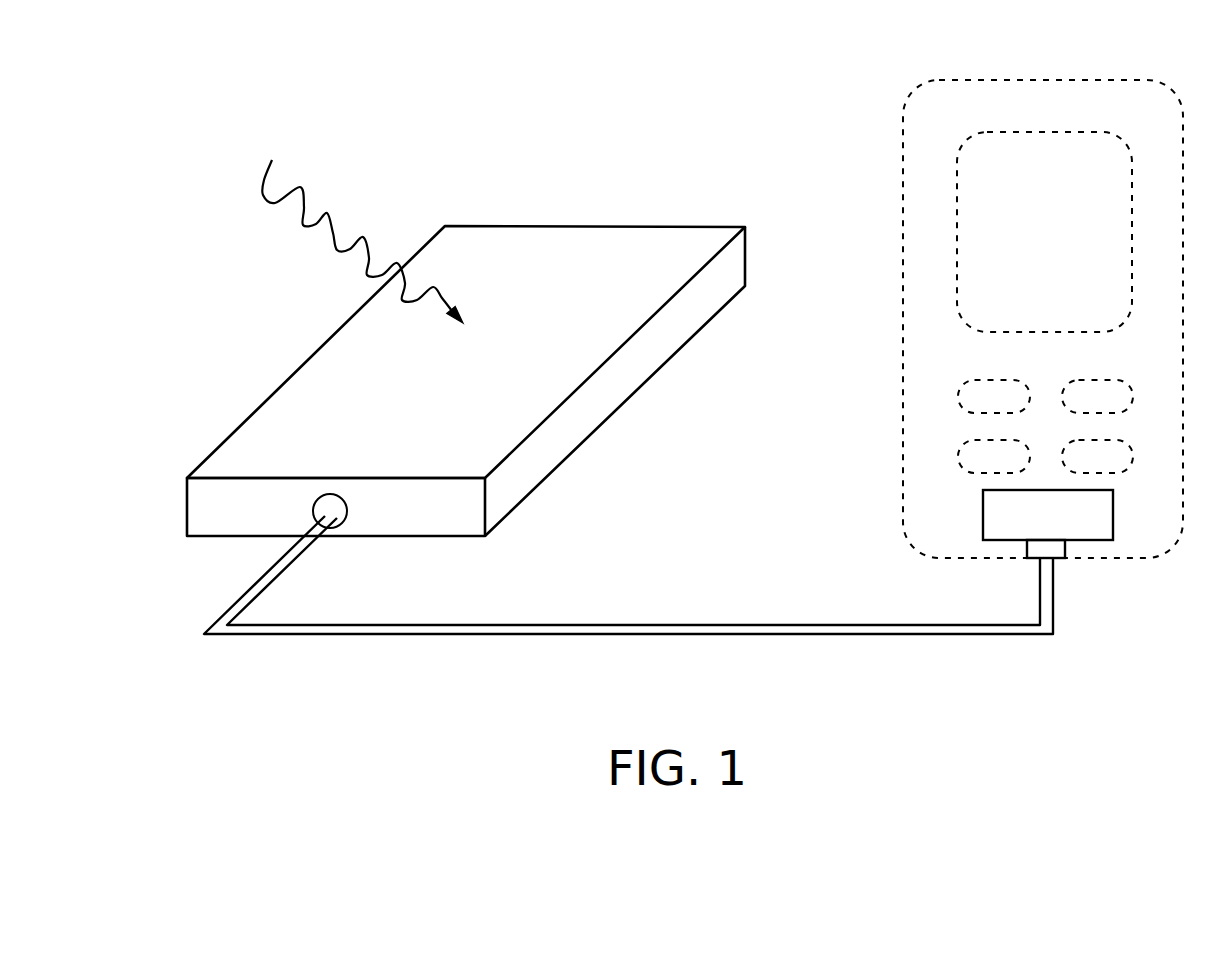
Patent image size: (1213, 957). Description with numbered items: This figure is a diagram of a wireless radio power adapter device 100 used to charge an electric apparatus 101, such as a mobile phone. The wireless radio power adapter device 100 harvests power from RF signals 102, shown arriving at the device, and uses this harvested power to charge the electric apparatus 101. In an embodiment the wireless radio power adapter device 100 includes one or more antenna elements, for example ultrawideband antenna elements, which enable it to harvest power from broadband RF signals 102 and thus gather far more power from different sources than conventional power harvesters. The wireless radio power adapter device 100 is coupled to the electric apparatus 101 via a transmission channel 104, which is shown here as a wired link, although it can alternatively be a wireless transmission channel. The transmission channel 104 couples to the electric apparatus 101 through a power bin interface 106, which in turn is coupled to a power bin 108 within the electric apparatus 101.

The wireless radio power adapter device 100 is at (529, 226).
The electric apparatus 101 is at (1005, 80).
The RF signals 102 is at (295, 220).
The transmission channel 104 is at (629, 640).
The power bin interface 106 is at (1027, 543).
The power bin 108 is at (1110, 520).